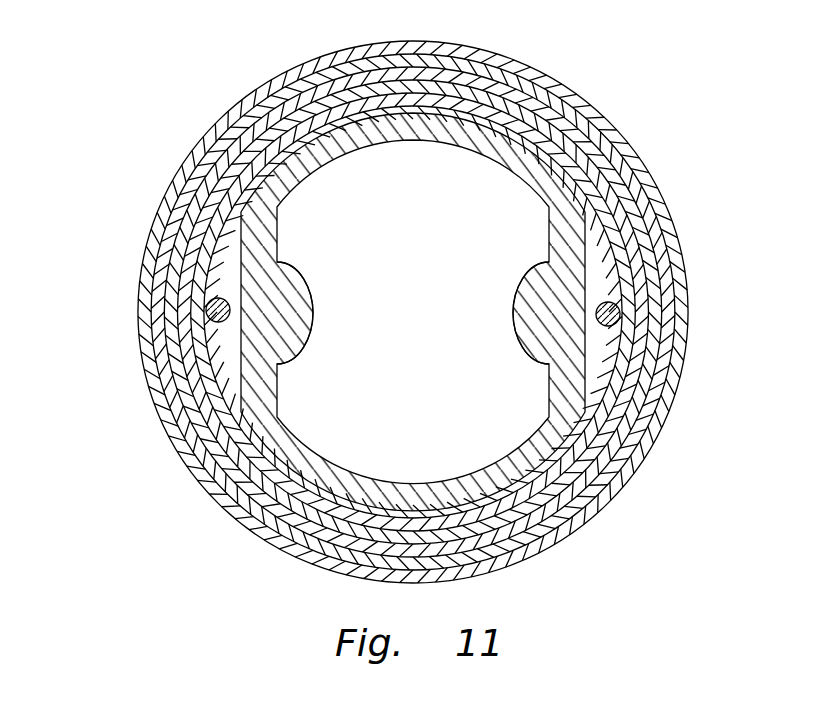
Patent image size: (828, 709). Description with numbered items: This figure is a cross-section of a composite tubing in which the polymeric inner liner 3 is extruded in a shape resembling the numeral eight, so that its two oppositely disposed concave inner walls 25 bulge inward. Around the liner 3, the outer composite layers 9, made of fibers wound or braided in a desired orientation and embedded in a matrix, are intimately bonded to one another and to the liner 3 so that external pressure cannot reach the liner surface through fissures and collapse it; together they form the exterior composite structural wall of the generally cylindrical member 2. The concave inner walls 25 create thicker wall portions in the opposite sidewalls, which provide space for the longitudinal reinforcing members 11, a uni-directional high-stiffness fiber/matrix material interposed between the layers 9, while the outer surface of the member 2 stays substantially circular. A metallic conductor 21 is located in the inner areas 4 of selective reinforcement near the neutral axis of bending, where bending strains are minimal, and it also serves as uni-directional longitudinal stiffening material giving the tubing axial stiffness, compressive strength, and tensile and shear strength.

The generally cylindrical member 2 is at (389, 312).
The inner liner 3 is at (297, 281).
The inner areas 4 is at (412, 312).
The outer composite layers 9 is at (413, 312).
The longitudinal reinforcing members 11 is at (590, 340).
The metallic conductor 21 is at (212, 322).
The concave inner wall 25 is at (515, 323).